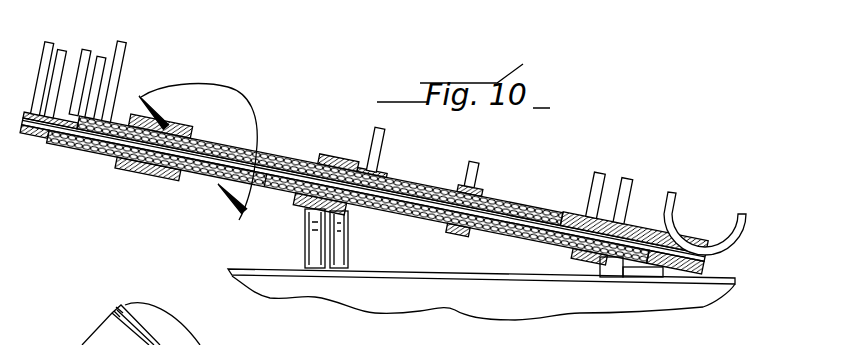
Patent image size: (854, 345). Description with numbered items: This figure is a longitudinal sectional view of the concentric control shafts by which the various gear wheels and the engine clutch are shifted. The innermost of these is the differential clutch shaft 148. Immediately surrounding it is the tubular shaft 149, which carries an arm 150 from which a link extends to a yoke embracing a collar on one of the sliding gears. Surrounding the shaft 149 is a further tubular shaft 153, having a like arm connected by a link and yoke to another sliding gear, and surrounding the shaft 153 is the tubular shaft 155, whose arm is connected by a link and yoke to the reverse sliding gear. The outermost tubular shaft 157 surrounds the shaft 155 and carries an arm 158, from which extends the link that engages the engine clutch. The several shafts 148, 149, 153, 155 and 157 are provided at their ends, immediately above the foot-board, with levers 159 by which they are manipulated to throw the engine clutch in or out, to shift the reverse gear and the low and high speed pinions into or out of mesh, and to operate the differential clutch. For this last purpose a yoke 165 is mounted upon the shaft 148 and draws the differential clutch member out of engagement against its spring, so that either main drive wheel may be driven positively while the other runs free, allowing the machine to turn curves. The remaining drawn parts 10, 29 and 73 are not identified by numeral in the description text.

The base support 10 is at (433, 300).
The section loop 29 is at (236, 92).
The support beam 73 is at (100, 342).
The differential clutch shaft 148 is at (153, 150).
The tubular shaft 149 is at (52, 140).
The arm 150 is at (636, 198).
The tubular shaft 153 is at (83, 147).
The tubular shaft 155 is at (213, 145).
The tubular shaft 157 is at (267, 200).
The arm 158 is at (388, 152).
The levers 159 is at (120, 54).
The yoke 165 is at (746, 226).